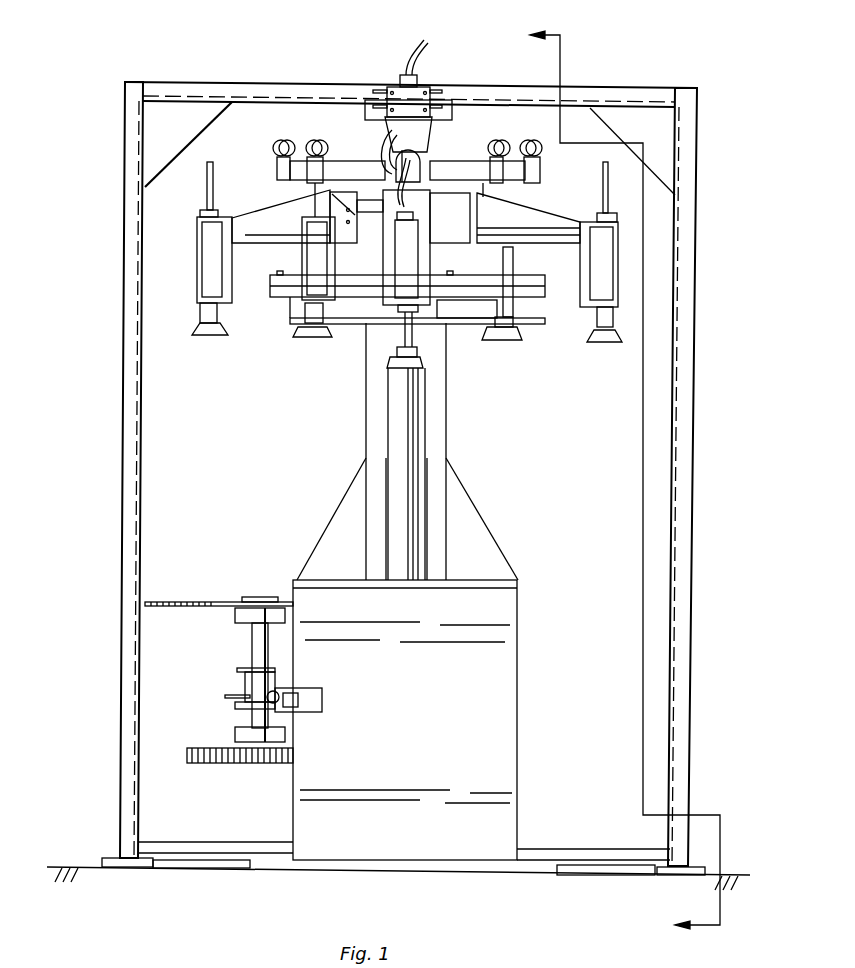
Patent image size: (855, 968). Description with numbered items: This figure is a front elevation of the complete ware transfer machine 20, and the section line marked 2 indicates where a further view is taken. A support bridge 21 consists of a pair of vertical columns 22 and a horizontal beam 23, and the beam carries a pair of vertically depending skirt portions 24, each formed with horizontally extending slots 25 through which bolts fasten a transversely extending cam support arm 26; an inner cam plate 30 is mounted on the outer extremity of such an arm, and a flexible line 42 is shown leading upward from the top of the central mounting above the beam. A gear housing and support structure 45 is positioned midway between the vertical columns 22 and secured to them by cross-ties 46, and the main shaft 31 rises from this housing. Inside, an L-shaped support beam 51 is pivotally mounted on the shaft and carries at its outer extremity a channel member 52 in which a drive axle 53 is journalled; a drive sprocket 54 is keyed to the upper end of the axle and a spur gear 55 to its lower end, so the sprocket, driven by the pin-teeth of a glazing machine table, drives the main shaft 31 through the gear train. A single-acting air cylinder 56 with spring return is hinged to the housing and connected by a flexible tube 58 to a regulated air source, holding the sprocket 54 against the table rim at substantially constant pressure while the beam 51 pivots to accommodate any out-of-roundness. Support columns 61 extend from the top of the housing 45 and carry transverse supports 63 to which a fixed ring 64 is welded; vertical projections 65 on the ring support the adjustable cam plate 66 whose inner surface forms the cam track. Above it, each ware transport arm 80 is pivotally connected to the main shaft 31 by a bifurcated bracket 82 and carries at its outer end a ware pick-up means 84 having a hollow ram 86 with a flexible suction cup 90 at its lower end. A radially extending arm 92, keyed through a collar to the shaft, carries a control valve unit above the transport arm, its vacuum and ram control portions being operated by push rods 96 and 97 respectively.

The ware transfer machine 20 is at (318, 68).
The support bridge 21 is at (112, 414).
The vertical columns 22 is at (125, 296).
The horizontal beam 23 is at (477, 86).
The skirt portions 24 is at (365, 112).
The horizontally extending slots 25 is at (380, 90).
The cam support arm 26 is at (422, 92).
The inner cam plate 30 is at (425, 152).
The main shaft 31 is at (419, 437).
The cable 42 is at (406, 70).
The gear housing and support structure 45 is at (528, 608).
The cross-ties 46 is at (222, 843).
The L-shaped support beam 51 is at (278, 668).
The channel member 52 is at (238, 672).
The drive axle 53 is at (252, 645).
The drive sprocket 54 is at (206, 602).
The spur gear 55 is at (200, 764).
The single-acting air cylinder 56 is at (281, 695).
The flexible tube 58 is at (228, 700).
The support columns 61 is at (366, 430).
The transverse supports 63 is at (350, 328).
The fixed ring 64 is at (290, 300).
The vertical projections 65 is at (270, 287).
The cam plate 66 is at (296, 276).
The ware transport arm 80 is at (252, 216).
The bifurcated bracket 82 is at (370, 236).
The ware pick-up means 84 is at (192, 258).
The hollow ram 86 is at (207, 188).
The flexible suction cup 90 is at (192, 334).
The radially extending arm 92 is at (356, 161).
The push rod 96 is at (278, 156).
The push rod 97 is at (314, 148).
The section line 2 is at (608, 483).